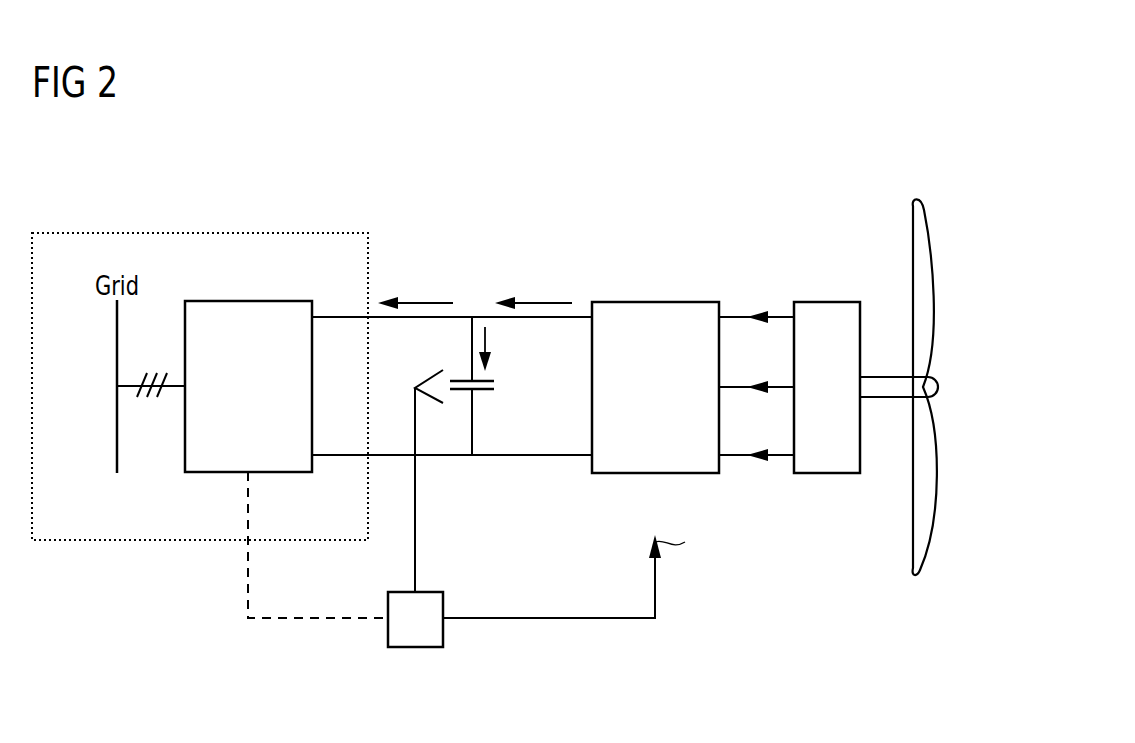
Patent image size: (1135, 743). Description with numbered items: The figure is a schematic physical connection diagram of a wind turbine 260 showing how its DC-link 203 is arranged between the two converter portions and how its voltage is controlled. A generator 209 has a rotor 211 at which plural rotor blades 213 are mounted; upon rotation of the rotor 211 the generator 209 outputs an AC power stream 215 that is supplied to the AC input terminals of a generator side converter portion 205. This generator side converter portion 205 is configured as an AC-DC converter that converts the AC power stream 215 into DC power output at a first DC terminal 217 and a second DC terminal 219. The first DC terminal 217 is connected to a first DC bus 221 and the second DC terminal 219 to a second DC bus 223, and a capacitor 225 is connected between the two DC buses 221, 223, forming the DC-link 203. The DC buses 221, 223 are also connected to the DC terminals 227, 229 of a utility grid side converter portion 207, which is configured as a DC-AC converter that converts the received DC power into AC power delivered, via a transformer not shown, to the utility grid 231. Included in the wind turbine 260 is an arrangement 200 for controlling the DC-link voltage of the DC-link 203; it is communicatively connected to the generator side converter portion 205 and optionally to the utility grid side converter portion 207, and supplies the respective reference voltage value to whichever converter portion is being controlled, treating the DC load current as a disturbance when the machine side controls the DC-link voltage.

The arrangement for controlling a DC-link-voltage 200 is at (423, 647).
The DC-link 203 is at (485, 339).
The generator side converter portion 205 is at (655, 302).
The utility grid side converter portion 207 is at (248, 301).
The generator 209 is at (826, 302).
The rotor 211 is at (877, 385).
The rotor blades 213 is at (917, 198).
The AC power stream 215 is at (748, 312).
The first DC terminal 217 is at (590, 462).
The second DC terminal 219 is at (592, 320).
The first DC bus 221 is at (502, 460).
The second DC bus 223 is at (483, 317).
The capacitor 225 is at (490, 417).
The DC terminal 227 is at (312, 454).
The DC terminal 229 is at (312, 316).
The utility grid 231 is at (117, 340).
The wind turbine 260 is at (871, 339).